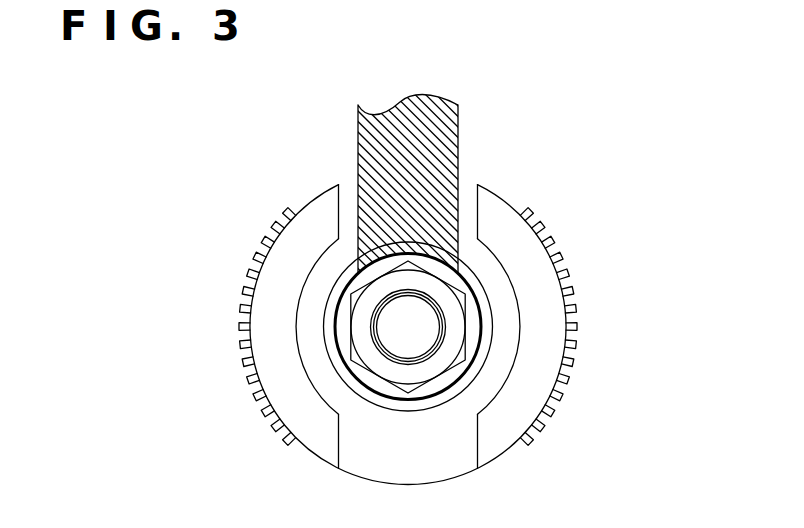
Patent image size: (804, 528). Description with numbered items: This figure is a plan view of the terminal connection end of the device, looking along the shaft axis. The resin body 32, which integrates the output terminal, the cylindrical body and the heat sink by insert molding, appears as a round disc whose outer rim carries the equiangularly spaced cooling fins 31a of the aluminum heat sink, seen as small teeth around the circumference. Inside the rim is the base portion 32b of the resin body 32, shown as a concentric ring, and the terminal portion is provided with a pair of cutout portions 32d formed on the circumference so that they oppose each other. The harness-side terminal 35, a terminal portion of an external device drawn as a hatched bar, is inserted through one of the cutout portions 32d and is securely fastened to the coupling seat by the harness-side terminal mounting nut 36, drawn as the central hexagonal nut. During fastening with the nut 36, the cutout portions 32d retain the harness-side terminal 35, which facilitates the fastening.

The cooling fins 31a is at (266, 243).
The resin body 32 is at (522, 386).
The base portion 32b is at (317, 346).
The cutout portions 32d is at (468, 200).
The harness-side terminal 35 is at (433, 140).
The harness-side terminal mounting nut 36 is at (448, 355).